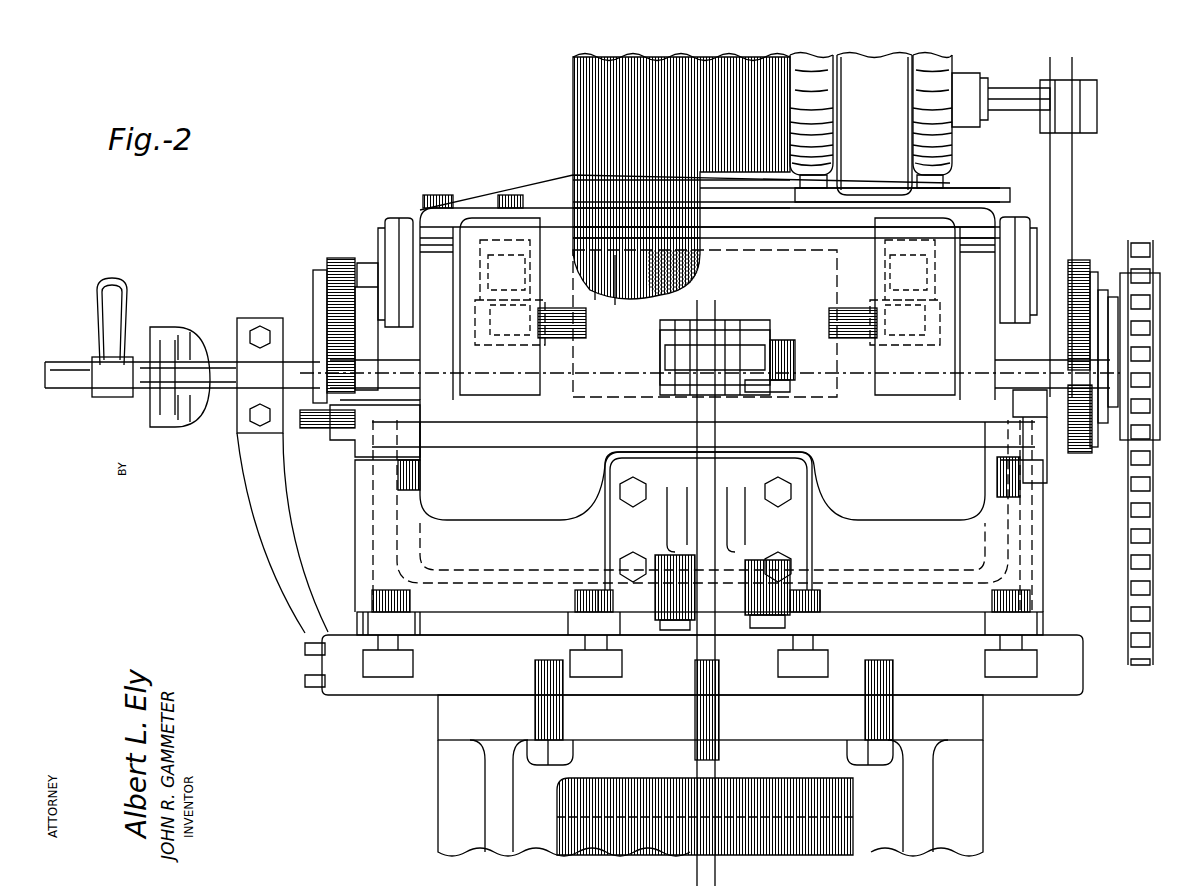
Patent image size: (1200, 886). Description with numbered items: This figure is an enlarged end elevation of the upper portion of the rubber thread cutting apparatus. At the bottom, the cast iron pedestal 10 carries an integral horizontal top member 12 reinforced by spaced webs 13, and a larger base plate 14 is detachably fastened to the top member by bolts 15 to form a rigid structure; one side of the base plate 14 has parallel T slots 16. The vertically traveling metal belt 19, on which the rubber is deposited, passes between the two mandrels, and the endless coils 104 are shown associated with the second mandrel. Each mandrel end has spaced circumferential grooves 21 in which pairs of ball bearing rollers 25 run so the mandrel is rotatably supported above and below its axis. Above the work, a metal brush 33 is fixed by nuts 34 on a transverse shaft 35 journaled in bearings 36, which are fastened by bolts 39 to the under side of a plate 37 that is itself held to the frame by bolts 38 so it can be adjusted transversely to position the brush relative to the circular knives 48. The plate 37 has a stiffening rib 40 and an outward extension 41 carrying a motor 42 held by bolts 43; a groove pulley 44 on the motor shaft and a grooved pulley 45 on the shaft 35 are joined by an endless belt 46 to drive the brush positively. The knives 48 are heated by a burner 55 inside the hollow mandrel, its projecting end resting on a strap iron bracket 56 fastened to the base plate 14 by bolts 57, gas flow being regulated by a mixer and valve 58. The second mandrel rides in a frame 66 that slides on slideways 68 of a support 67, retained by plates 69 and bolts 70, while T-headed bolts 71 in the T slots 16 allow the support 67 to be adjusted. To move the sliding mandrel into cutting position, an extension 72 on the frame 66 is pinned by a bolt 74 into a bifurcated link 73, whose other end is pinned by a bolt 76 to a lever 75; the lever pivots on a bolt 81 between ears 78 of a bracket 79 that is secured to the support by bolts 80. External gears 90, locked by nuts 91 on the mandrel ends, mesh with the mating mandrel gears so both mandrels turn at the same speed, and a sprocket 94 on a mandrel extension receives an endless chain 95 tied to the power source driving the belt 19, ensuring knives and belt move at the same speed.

The pedestal 10 is at (970, 795).
The top member 12 is at (975, 738).
The webs 13 is at (493, 806).
The base plate 14 is at (338, 695).
The bolts 15 is at (540, 765).
The T slots 16 is at (388, 676).
The metal belt 19 is at (595, 175).
The circumferential grooves 21 is at (448, 395).
The ball bearing rollers 25 is at (397, 218).
The metal brush 33 is at (698, 320).
The nuts 34 is at (550, 340).
The shaft 35 is at (645, 335).
The bearings 36 is at (525, 345).
The plate 37 is at (473, 208).
The bolts 38 is at (437, 195).
The bolts 39 is at (512, 195).
The rib 40 is at (560, 174).
The extension 41 is at (965, 198).
The motor 42 is at (950, 148).
The bolts 43 is at (945, 186).
The groove pulley 44 is at (1085, 140).
The grooved pulley 45 is at (1105, 290).
The endless belt 46 is at (1072, 182).
The circular knives 48 is at (615, 305).
The burner 55 is at (235, 345).
The strap iron bracket 56 is at (275, 505).
The bolts 57 is at (305, 680).
The mixer and valve 58 is at (127, 325).
The frame 66 is at (800, 448).
The support 67 is at (1043, 545).
The slideway 68 is at (395, 445).
The plates 69 is at (345, 430).
The bolts 70 is at (355, 375).
The bolts 71 is at (600, 676).
The extension 72 is at (725, 320).
The link 73 is at (745, 320).
The bolt 74 is at (795, 357).
The lever 75 is at (715, 440).
The bolt 76 is at (770, 382).
The ears 78 is at (740, 556).
The bracket 79 is at (800, 560).
The bolts 80 is at (628, 567).
The bolt 81 is at (663, 556).
The external gears 90 is at (341, 258).
The nuts 91 is at (316, 270).
The sprocket 94 is at (1155, 318).
The endless chain 95 is at (1153, 530).
The endless coils 104 is at (575, 105).